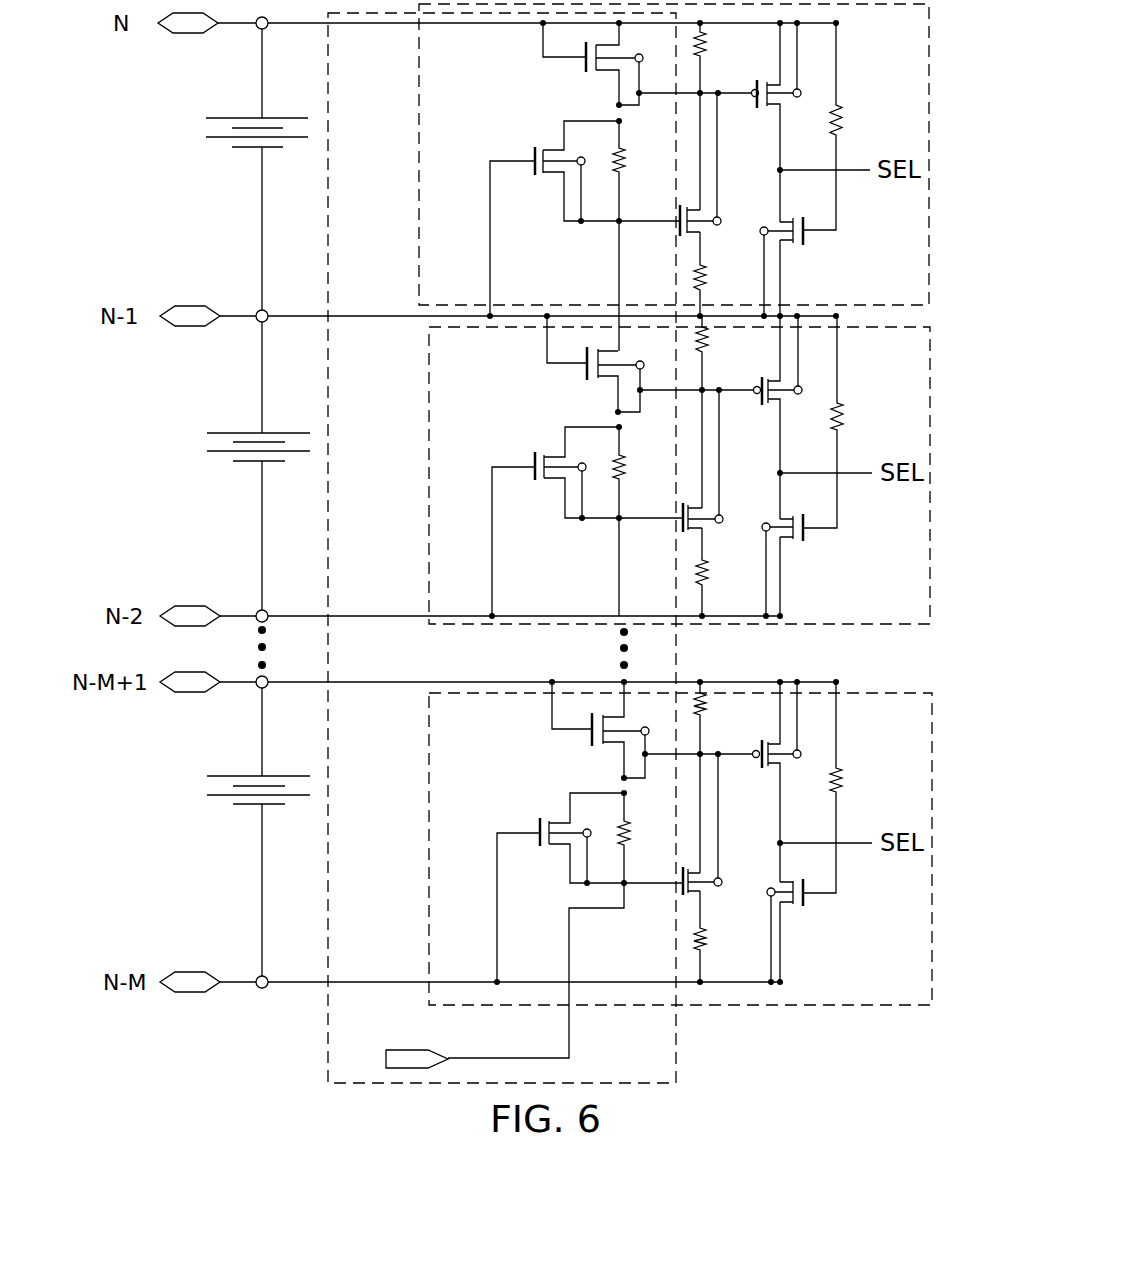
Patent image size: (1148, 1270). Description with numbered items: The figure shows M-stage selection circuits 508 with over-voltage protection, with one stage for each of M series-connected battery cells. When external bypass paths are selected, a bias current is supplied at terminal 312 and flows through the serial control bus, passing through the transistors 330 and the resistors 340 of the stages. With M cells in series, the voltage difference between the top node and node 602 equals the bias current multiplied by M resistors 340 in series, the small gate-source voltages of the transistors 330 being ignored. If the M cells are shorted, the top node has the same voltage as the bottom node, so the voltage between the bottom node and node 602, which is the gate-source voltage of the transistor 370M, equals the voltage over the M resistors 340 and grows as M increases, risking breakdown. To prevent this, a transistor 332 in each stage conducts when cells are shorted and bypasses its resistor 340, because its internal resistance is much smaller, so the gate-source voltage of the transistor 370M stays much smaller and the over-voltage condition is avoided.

The M-stage selection circuits 508 is at (419, 130).
The transistor 330 is at (586, 60).
The transistor 332 is at (535, 160).
The resistor 340 is at (627, 172).
The node 602 is at (627, 886).
The transistor 370M is at (722, 886).
The terminal 312 is at (393, 1062).